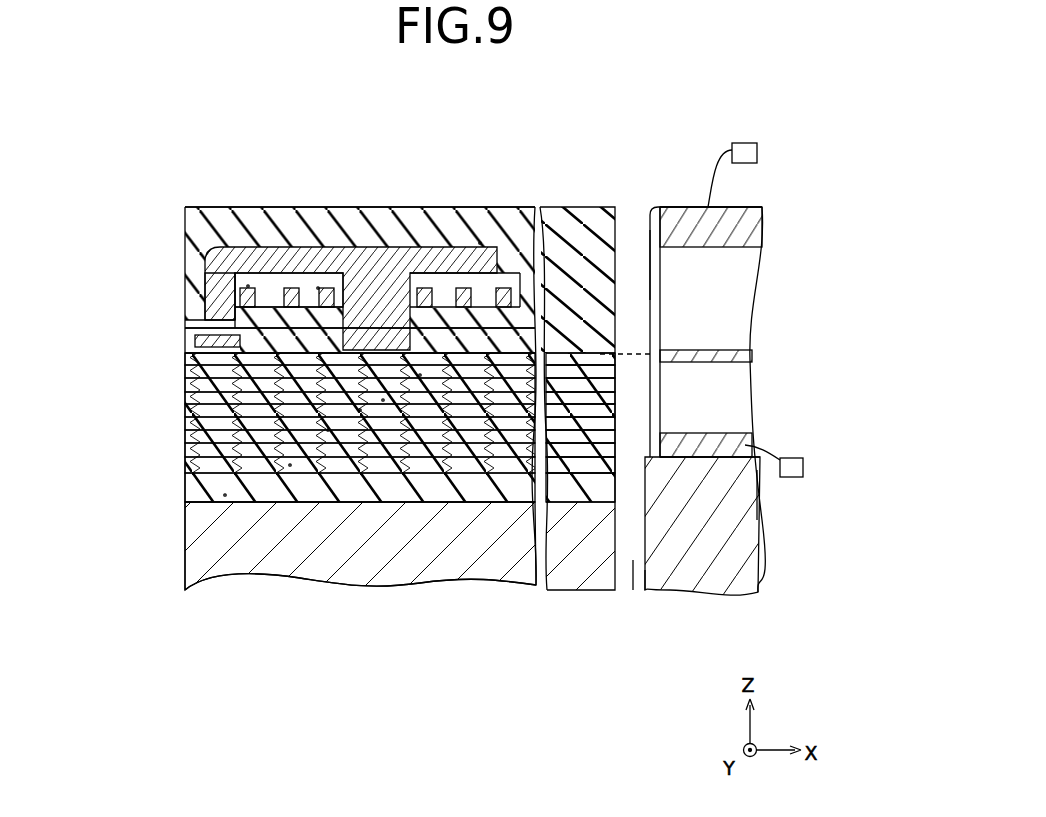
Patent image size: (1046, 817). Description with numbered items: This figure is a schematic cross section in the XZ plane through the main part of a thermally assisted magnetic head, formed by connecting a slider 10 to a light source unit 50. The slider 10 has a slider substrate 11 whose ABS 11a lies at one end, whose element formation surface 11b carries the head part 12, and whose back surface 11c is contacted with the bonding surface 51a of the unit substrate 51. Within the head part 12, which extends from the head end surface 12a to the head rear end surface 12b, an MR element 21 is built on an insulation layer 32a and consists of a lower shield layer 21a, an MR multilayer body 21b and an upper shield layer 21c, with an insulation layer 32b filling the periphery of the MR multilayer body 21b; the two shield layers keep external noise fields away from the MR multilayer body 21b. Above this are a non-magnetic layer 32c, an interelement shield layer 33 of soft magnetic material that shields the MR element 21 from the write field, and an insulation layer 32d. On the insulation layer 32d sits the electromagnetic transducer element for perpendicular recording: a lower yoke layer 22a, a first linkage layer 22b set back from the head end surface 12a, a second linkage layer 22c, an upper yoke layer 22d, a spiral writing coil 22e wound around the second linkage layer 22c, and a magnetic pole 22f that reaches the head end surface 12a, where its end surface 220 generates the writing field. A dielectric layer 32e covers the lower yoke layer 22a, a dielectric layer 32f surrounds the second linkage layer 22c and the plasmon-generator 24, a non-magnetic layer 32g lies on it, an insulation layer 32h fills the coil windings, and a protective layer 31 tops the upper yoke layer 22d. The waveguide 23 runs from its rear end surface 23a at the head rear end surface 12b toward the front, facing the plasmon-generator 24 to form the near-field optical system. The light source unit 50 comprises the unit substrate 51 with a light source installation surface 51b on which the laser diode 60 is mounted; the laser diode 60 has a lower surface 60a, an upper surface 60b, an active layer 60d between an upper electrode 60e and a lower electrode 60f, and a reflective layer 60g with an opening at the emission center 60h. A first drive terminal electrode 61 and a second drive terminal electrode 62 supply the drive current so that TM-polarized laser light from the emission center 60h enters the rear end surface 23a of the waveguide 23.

The slider 10 is at (514, 147).
The slider substrate 11 is at (270, 565).
The ABS 11a is at (187, 550).
The element formation surface 11b is at (187, 493).
The back surface 11c is at (615, 597).
The head part 12 is at (523, 200).
The head end surface 12a is at (187, 270).
The head rear end surface 12b is at (620, 204).
The MR element 21 is at (338, 460).
The lower shield layer 21a is at (362, 477).
The MR multilayer body 21b is at (187, 452).
The upper shield layer 21c is at (187, 440).
The lower yoke layer 22a is at (187, 390).
The first linkage layer 22b is at (187, 372).
The second linkage layer 22c is at (385, 300).
The upper yoke layer 22d is at (187, 293).
The writing coil 22e is at (282, 298).
The magnetic pole 22f is at (187, 320).
The end surface 220 is at (187, 313).
The waveguide 23 is at (187, 360).
The rear end surface 23a is at (635, 352).
The plasmon-generator 24 is at (187, 352).
The protective layer 31 is at (187, 242).
The insulation layer 32a is at (225, 495).
The insulation layer 32b is at (290, 465).
The non-magnetic layer 32c is at (328, 430).
The insulation layer 32d is at (383, 400).
The dielectric layer 32e is at (420, 375).
The dielectric layer 32f is at (318, 288).
The non-magnetic layer 32g is at (248, 285).
The insulation layer 32h is at (480, 243).
The interelement shield layer 33 is at (360, 410).
The light source unit 50 is at (702, 160).
The unit substrate 51 is at (745, 540).
The bonding surface 51a is at (645, 597).
The light source installation surface 51b is at (697, 440).
The laser diode 60 is at (759, 202).
The lower surface 60a is at (756, 487).
The upper surface 60b is at (723, 207).
The active layer 60d is at (748, 354).
The upper electrode 60e is at (762, 225).
The lower electrode 60f is at (748, 432).
The reflective layer 60g is at (650, 235).
The emission center 60h is at (634, 598).
The first drive terminal electrode 61 is at (805, 468).
The second drive terminal electrode 62 is at (757, 147).